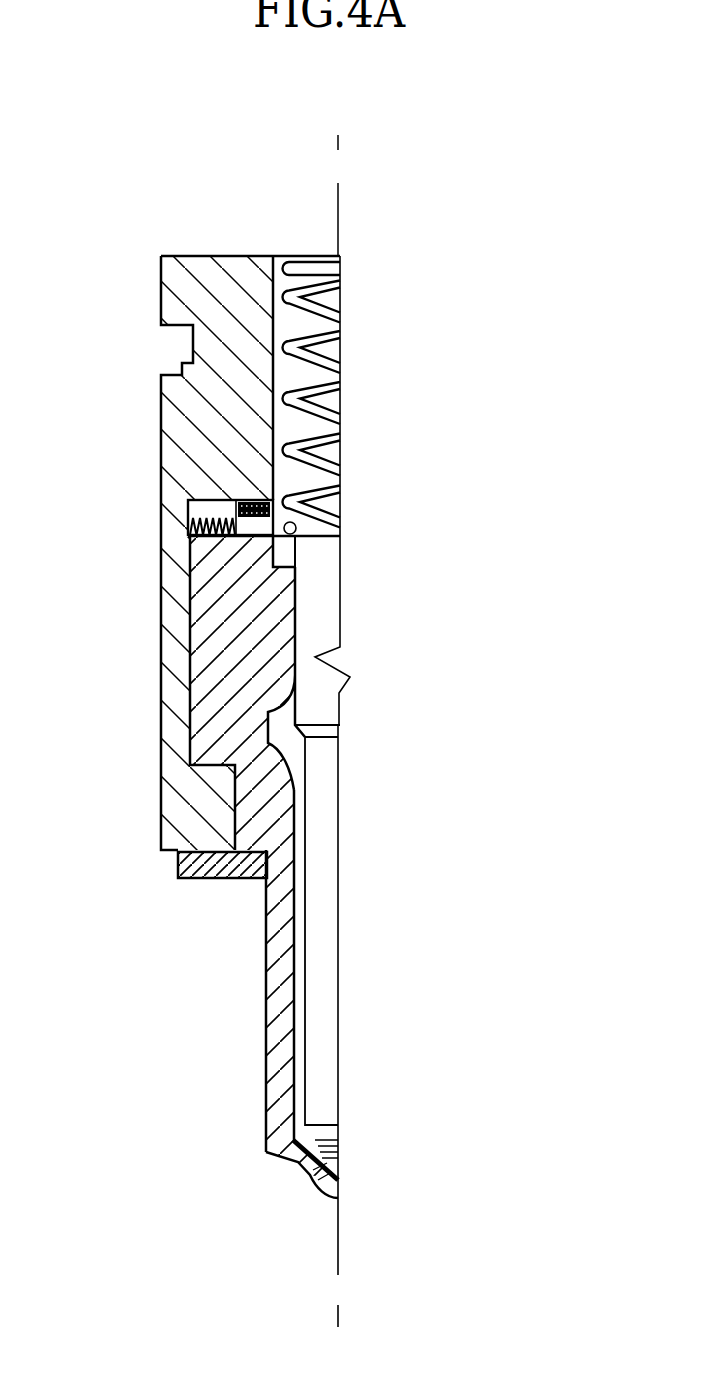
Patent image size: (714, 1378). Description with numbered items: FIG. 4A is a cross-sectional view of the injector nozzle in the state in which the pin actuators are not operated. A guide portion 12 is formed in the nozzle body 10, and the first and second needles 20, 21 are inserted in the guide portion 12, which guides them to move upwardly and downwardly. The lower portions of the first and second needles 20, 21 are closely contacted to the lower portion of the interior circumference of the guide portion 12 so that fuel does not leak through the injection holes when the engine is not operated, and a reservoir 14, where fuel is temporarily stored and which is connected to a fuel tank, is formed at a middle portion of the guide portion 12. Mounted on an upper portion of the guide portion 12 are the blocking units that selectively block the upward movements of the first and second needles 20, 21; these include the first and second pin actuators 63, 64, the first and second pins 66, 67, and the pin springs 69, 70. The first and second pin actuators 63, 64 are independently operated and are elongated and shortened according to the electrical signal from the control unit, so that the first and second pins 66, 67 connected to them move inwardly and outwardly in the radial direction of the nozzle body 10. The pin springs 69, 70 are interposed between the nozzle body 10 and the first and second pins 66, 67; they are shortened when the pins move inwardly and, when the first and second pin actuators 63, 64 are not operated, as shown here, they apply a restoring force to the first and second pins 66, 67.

The nozzle body 10 is at (272, 963).
The guide portion 12 is at (302, 1030).
The reservoir 14 is at (287, 742).
The first needle 20 is at (244, 1156).
The second needle 21 is at (320, 1115).
The first pin actuator 63 is at (154, 549).
The second pin actuator 64 is at (210, 537).
The first pin 66 is at (162, 605).
The second pin 67 is at (247, 537).
The pin spring 69 is at (160, 427).
The pin spring 70 is at (257, 501).